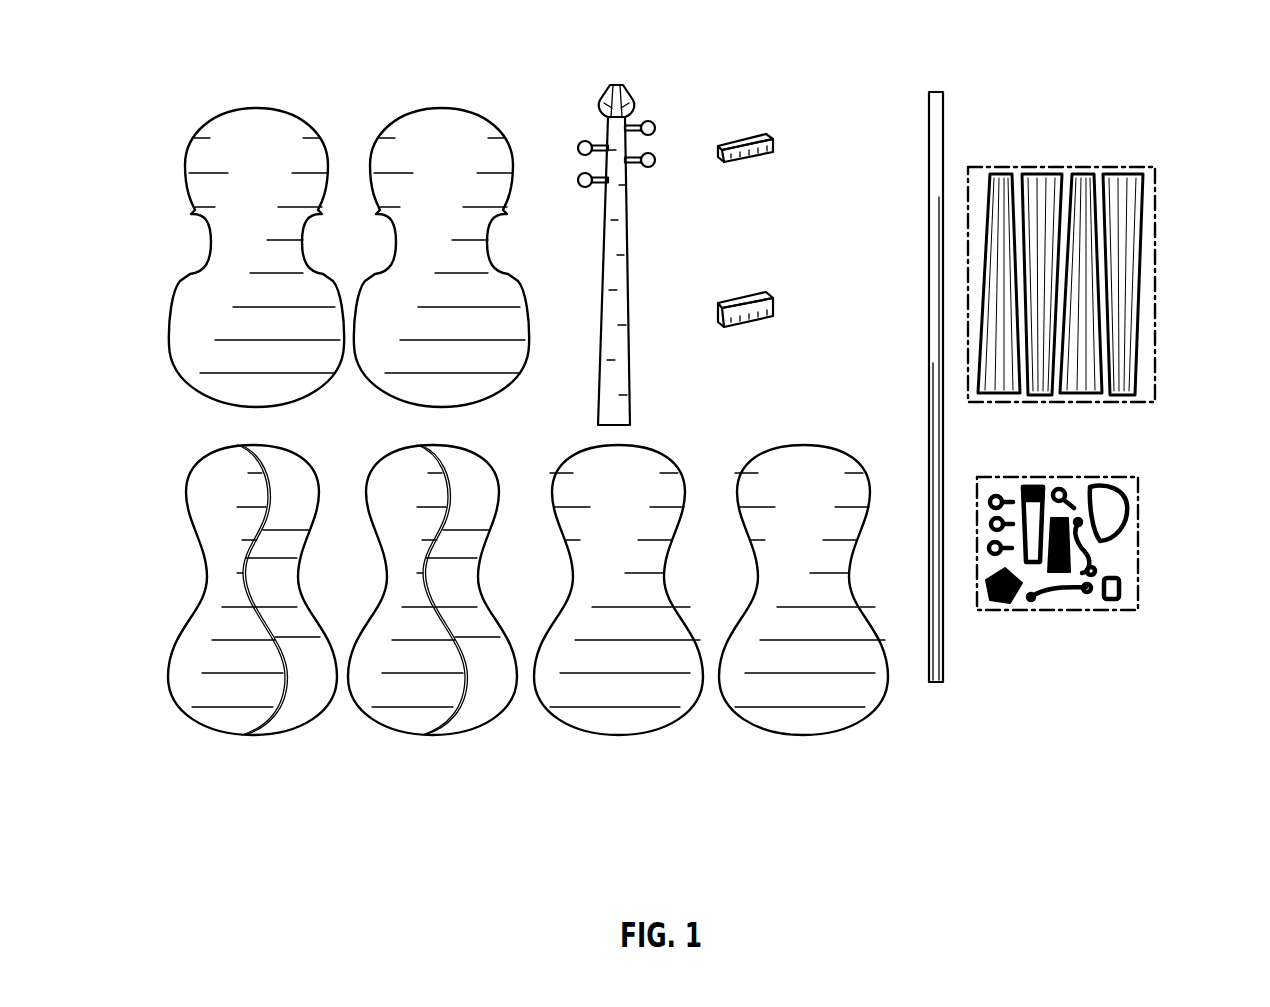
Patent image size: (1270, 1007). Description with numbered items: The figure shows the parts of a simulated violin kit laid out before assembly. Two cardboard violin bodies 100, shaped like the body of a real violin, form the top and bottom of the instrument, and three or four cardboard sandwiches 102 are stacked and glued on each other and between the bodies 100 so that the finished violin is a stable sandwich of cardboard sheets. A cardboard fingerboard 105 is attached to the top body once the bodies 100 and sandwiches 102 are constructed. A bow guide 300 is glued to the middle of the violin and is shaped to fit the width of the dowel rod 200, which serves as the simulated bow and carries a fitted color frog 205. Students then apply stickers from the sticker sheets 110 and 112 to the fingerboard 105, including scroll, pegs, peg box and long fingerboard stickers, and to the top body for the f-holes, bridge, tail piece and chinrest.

The cardboard violin bodies 100 is at (528, 80).
The cardboard sandwiches 102 is at (888, 760).
The cardboard fingerboard 105 is at (621, 250).
The bow guide 300 is at (763, 160).
The color frog 205 is at (752, 328).
The dowel rod 200 is at (930, 260).
The sticker sheet 110 is at (1155, 303).
The sticker sheet 112 is at (1130, 540).